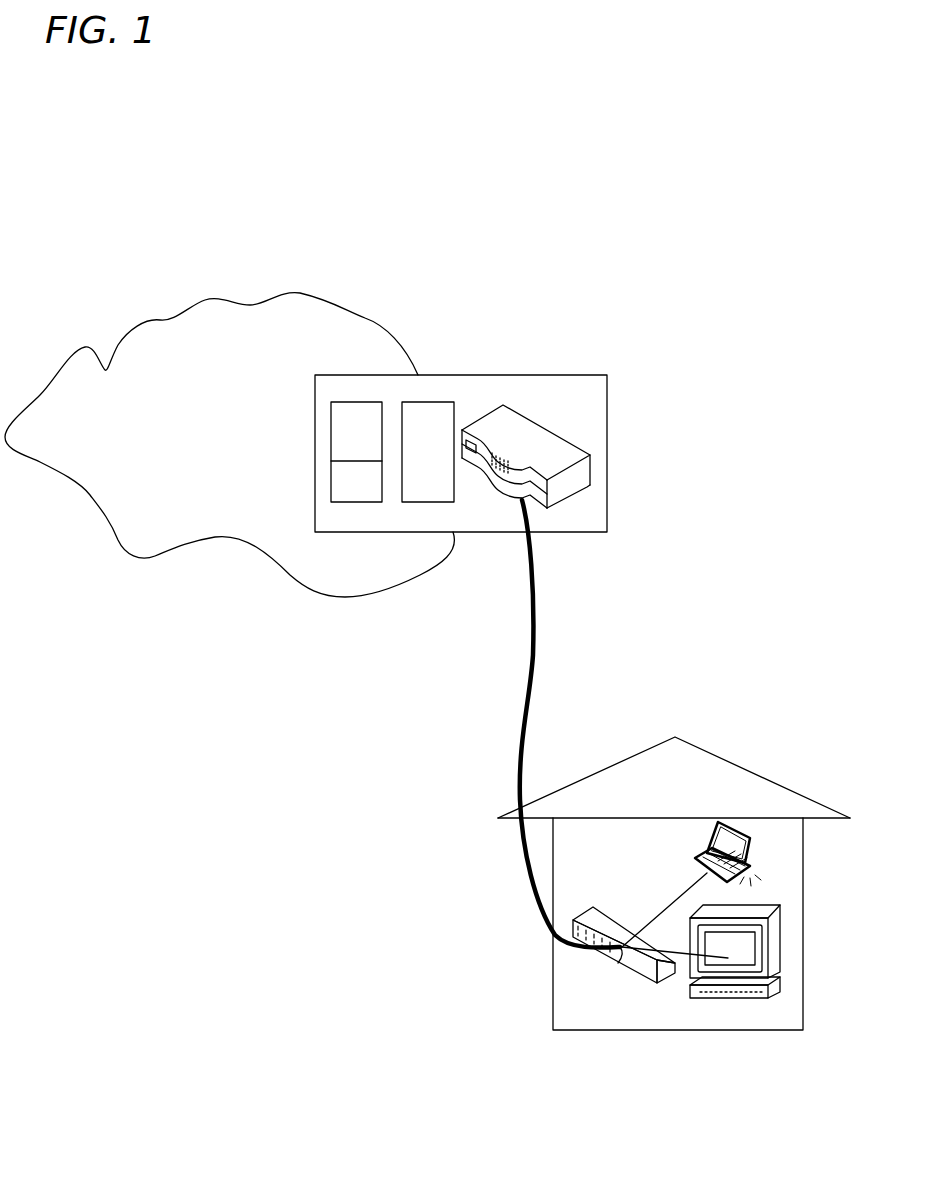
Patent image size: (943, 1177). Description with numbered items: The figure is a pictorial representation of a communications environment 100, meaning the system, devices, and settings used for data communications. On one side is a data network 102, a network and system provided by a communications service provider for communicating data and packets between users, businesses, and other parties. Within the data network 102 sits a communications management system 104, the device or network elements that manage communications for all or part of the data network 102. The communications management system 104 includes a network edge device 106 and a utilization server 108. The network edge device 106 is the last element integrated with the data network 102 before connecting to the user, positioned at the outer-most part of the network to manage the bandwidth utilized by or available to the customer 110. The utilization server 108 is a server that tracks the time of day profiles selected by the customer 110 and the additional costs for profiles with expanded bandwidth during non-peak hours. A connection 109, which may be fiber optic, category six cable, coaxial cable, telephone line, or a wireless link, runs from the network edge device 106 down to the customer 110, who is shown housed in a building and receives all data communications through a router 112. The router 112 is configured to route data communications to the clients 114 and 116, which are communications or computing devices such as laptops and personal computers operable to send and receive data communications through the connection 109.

The communications environment 100 is at (137, 225).
The data network 102 is at (258, 470).
The communications management system 104 is at (475, 375).
The network edge device 106 is at (557, 473).
The utilization server 108 is at (428, 480).
The connection 109 is at (533, 655).
The customer 110 is at (718, 745).
The router 112 is at (618, 963).
The client 114 is at (752, 868).
The client 116 is at (738, 998).